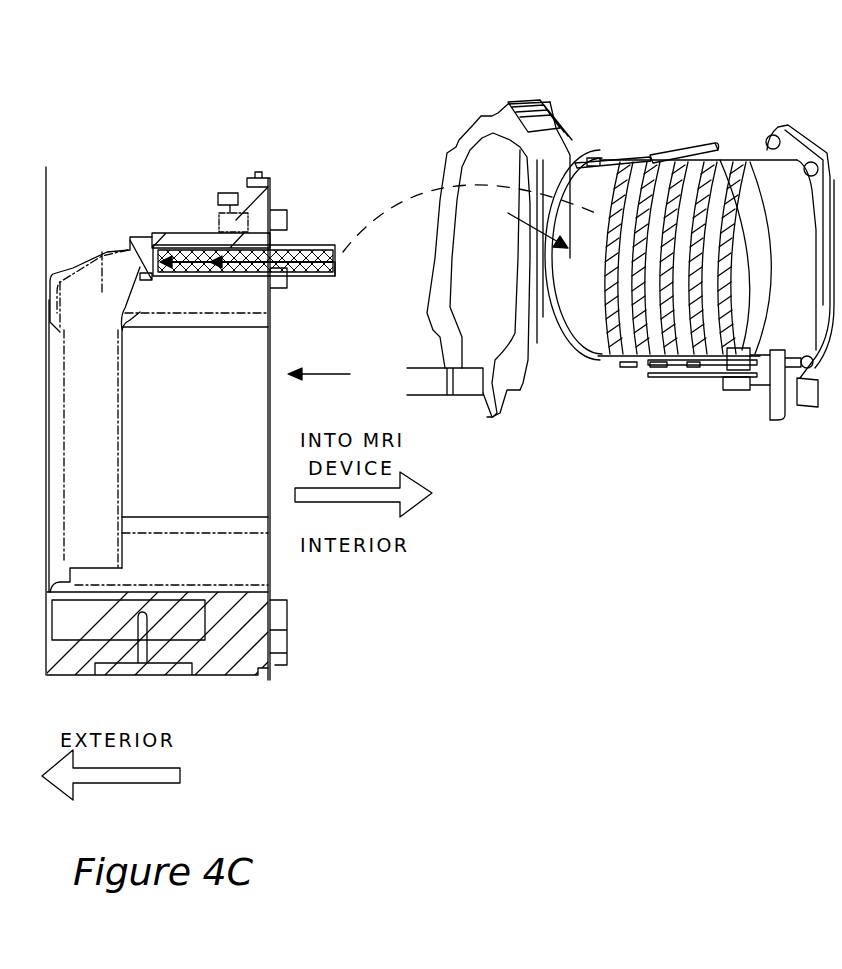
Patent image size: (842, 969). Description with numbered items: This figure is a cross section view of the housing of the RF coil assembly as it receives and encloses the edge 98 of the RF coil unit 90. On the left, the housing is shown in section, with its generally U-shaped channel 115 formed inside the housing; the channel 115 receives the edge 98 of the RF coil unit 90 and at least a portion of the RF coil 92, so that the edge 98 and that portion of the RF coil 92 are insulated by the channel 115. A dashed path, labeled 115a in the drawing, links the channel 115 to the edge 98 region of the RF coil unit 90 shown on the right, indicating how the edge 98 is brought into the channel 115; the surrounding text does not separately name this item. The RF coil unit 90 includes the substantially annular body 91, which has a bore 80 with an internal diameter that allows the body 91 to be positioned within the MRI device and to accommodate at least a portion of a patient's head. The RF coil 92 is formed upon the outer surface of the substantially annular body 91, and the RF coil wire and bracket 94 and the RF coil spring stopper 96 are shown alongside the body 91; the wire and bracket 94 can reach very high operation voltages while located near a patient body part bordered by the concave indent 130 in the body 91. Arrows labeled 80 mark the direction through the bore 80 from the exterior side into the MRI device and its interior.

The bore 80 is at (428, 300).
The RF coil unit 90 is at (337, 274).
The substantially annular body 91 is at (738, 158).
The RF coil 92 is at (645, 372).
The RF coil wire and bracket 94 is at (680, 150).
The RF coil spring stopper 96 is at (590, 158).
The edge 98 is at (152, 238).
The channel 115 is at (183, 248).
The seal engagement path 115a is at (392, 202).
The indent 130 is at (572, 178).